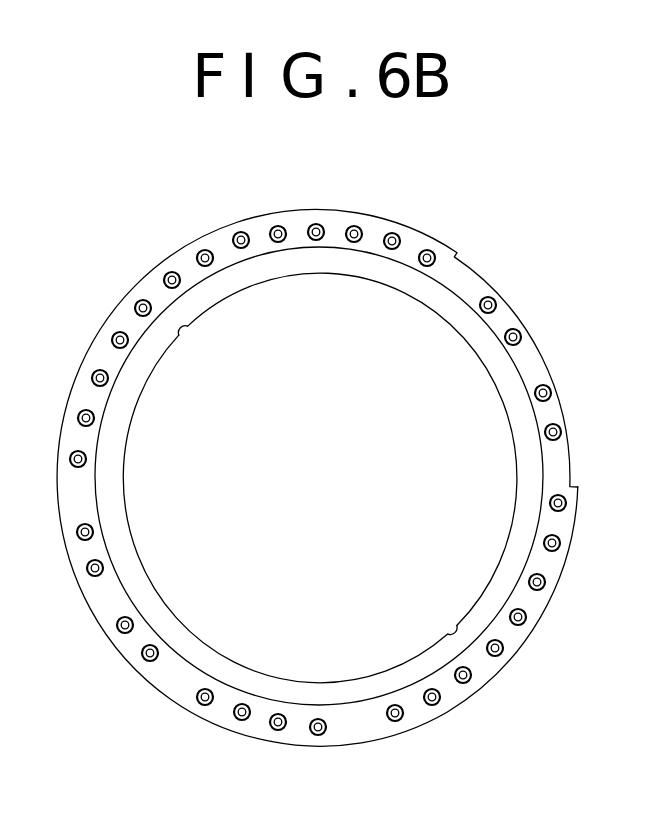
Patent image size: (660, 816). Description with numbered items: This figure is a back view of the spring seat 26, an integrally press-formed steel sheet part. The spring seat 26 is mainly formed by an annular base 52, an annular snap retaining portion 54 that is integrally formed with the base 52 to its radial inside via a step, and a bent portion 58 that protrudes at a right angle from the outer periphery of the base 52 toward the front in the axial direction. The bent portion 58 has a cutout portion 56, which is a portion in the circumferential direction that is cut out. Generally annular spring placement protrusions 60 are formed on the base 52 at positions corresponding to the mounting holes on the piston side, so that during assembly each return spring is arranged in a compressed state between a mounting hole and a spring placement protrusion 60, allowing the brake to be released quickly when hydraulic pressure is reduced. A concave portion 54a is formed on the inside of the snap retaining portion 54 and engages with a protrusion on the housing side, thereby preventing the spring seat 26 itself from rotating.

The spring seat 26 is at (516, 226).
The annular base 52 is at (258, 229).
The snap retaining portion 54 is at (313, 263).
The concave portion 54a is at (184, 331).
The cutout portion 56 is at (540, 350).
The bent portion 58 is at (385, 220).
The spring placement protrusion 60 is at (96, 425).